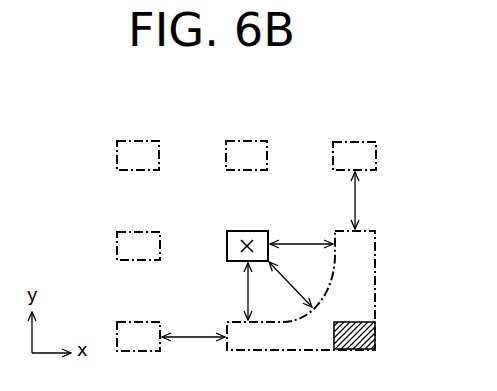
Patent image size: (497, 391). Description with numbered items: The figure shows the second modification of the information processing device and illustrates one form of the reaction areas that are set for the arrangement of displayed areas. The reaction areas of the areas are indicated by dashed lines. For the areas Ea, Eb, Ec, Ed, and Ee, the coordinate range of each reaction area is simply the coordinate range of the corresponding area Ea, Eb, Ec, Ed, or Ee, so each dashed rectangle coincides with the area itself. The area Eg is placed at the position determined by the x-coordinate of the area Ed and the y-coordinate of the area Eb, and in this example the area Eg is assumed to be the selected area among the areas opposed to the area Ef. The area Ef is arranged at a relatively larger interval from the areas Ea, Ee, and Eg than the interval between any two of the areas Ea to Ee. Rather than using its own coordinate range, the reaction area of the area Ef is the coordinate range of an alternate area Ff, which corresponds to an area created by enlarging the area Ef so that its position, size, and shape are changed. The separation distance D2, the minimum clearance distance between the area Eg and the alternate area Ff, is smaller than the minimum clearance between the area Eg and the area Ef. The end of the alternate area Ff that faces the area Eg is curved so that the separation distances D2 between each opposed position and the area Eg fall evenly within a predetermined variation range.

The area Ea is at (138, 321).
The area Eb is at (138, 231).
The area Ec is at (139, 140).
The area Ed is at (248, 140).
The area Ee is at (358, 141).
The area Eg is at (252, 230).
The alternate area Ff is at (378, 247).
The area Ef is at (364, 318).
The separation distance D2 is at (230, 291).